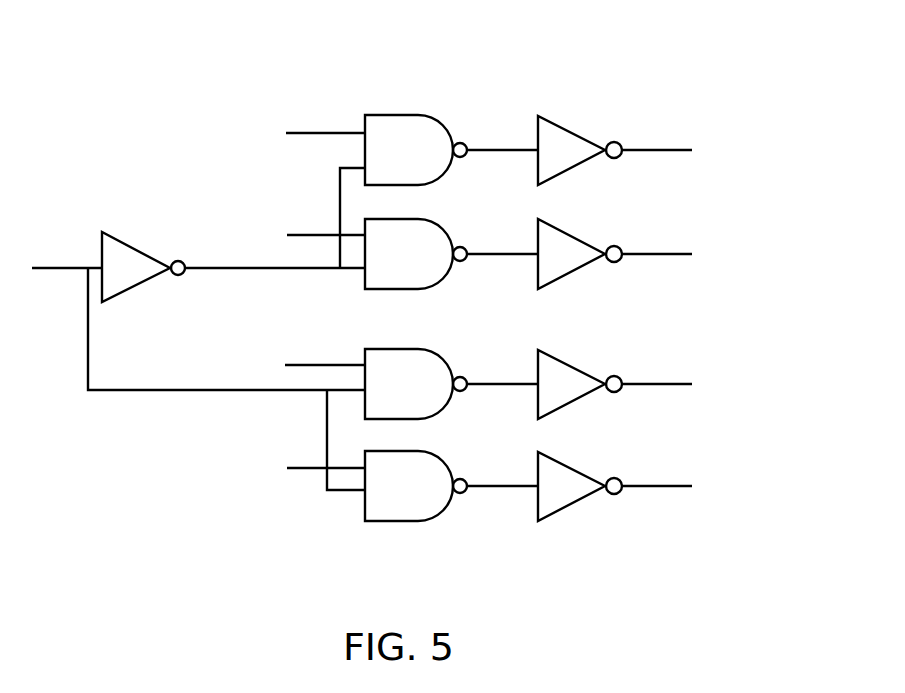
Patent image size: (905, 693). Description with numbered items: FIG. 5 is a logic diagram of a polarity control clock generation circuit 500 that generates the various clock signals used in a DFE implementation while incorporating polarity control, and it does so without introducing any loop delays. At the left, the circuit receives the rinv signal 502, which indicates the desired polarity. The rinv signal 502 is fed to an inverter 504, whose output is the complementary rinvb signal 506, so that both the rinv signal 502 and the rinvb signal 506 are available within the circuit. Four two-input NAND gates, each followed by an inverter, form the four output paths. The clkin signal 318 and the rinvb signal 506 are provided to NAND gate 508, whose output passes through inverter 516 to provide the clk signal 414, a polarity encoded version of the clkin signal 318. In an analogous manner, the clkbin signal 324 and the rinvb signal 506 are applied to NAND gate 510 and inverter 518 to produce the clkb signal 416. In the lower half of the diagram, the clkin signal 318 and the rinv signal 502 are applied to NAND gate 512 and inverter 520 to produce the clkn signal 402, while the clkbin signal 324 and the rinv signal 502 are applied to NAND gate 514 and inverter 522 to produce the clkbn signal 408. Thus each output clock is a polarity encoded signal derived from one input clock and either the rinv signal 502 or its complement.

The polarity control clock generation circuit 500 is at (712, 64).
The rinv signal 502 is at (43, 268).
The inverter 504 is at (137, 287).
The rinvb signal 506 is at (218, 268).
The clkin signal 318 is at (348, 133).
The clkbin signal 324 is at (333, 235).
The NAND gate 508 is at (413, 115).
The NAND gate 510 is at (418, 219).
The NAND gate 512 is at (410, 349).
The NAND gate 514 is at (400, 521).
The inverter 516 is at (565, 130).
The inverter 518 is at (568, 231).
The inverter 520 is at (565, 366).
The inverter 522 is at (567, 510).
The clk signal 414 is at (650, 152).
The clkb signal 416 is at (650, 256).
The clkn signal 402 is at (650, 386).
The clkbn signal 408 is at (650, 488).